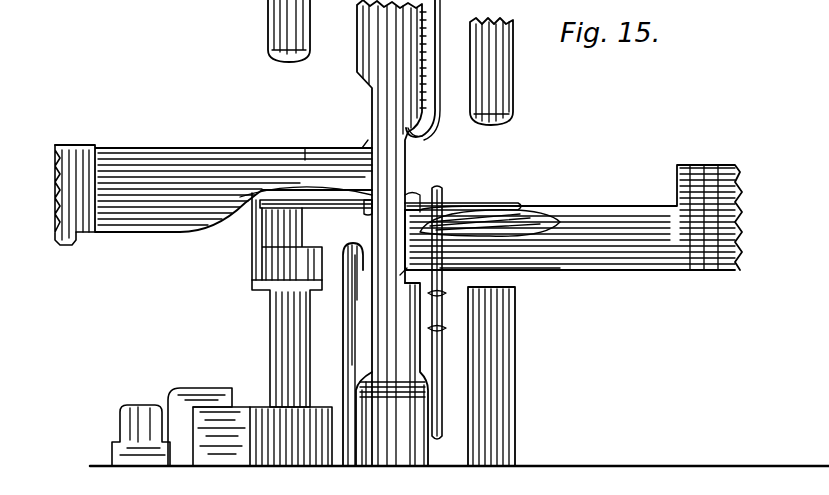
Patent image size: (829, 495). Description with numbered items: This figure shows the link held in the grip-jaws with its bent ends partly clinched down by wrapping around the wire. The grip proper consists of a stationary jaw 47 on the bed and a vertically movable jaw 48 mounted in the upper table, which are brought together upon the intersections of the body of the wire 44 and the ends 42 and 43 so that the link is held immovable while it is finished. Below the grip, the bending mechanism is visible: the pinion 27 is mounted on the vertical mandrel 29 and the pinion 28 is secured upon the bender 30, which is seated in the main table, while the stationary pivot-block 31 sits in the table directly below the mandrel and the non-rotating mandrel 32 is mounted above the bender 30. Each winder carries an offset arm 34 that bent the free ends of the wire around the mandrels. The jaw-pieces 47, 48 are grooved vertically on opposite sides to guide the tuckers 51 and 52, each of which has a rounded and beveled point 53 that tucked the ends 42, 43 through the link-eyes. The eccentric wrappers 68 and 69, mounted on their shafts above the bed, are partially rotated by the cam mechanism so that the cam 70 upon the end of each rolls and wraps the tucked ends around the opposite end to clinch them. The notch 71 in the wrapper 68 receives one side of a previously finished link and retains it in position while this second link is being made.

The pinion 27 is at (181, 427).
The pinion 28 is at (291, 450).
The vertical mandrel 29 is at (503, 71).
The bender 30 is at (283, 343).
The stationary pivot-block 31 is at (503, 376).
The non-rotating mandrel 32 is at (275, 31).
The arm 34 is at (275, 236).
The wire end 42 is at (353, 218).
The wire end 43 is at (305, 150).
The body of the wire 44 is at (478, 195).
The jaw 47 is at (392, 374).
The jaw 48 is at (391, 233).
The tucker 51 is at (432, 219).
The tucker 52 is at (338, 360).
The beveled point 53 is at (389, 296).
The wrapper 68 is at (573, 217).
The wrapper 69 is at (213, 185).
The cam 70 is at (362, 146).
The notch 71 is at (500, 271).